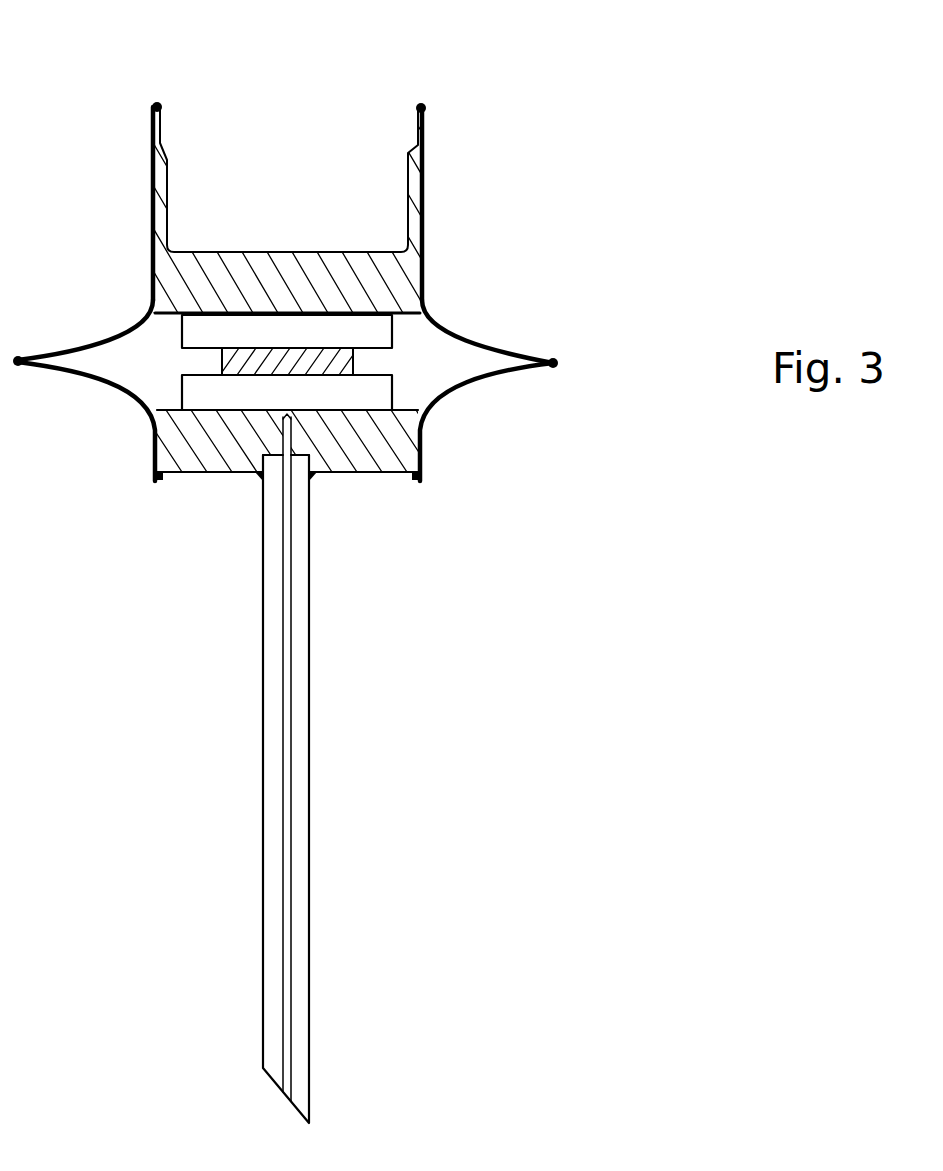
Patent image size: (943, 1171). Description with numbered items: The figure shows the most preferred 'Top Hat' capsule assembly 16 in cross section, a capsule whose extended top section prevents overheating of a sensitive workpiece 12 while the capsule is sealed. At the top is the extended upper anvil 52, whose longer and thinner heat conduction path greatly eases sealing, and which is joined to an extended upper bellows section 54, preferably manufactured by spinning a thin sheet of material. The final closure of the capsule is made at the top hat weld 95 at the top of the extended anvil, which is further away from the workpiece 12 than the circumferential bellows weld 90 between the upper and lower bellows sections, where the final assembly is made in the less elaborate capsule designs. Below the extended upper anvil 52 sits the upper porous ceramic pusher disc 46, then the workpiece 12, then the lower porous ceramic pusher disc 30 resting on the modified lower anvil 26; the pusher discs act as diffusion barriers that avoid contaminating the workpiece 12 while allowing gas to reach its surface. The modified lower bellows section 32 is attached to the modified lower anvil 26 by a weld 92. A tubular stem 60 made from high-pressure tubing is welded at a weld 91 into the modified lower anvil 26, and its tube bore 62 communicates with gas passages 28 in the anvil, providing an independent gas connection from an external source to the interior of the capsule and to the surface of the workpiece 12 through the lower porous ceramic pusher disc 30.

The Top Hat capsule assembly 16 is at (123, 315).
The top hat weld 95 is at (157, 90).
The extended upper anvil 52 is at (342, 285).
The upper porous ceramic pusher disc 46 is at (372, 332).
The extended upper bellows section 54 is at (462, 333).
The modified lower bellows section 32 is at (487, 383).
The circumferential bellows weld 90 is at (18, 370).
The workpiece 12 is at (327, 363).
The lower porous ceramic pusher disc 30 is at (365, 394).
The modified lower anvil 26 is at (373, 457).
The weld 92 is at (160, 482).
The weld 91 is at (257, 478).
The gas passages 28 is at (290, 420).
The tubular stem 60 is at (297, 717).
The tube bore 62 is at (287, 808).